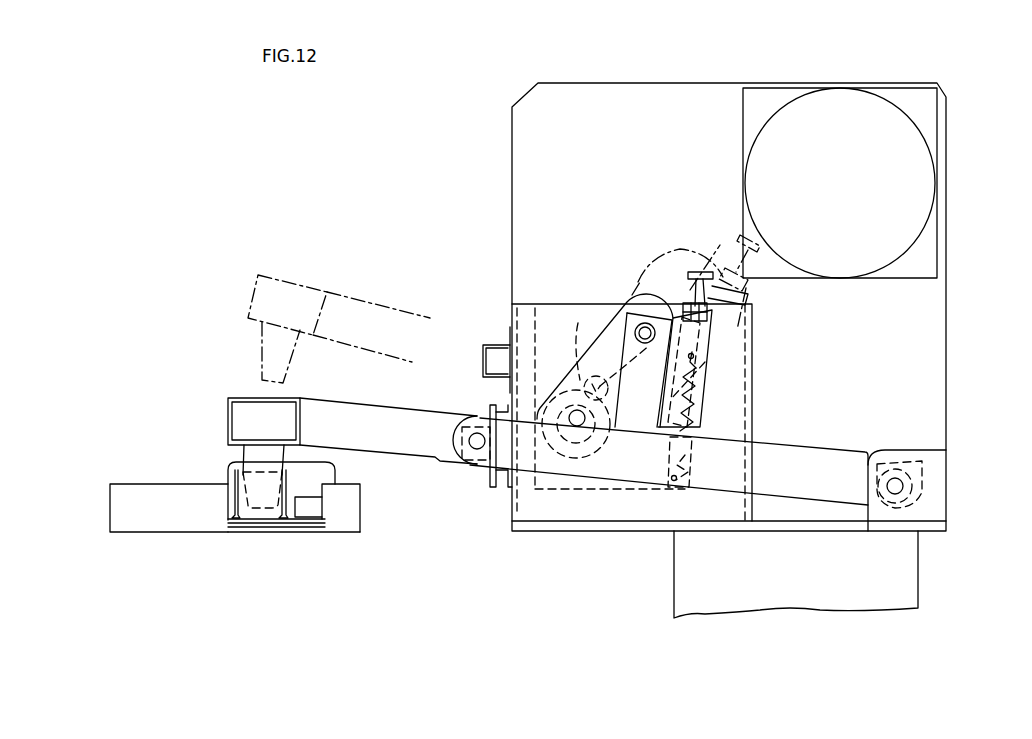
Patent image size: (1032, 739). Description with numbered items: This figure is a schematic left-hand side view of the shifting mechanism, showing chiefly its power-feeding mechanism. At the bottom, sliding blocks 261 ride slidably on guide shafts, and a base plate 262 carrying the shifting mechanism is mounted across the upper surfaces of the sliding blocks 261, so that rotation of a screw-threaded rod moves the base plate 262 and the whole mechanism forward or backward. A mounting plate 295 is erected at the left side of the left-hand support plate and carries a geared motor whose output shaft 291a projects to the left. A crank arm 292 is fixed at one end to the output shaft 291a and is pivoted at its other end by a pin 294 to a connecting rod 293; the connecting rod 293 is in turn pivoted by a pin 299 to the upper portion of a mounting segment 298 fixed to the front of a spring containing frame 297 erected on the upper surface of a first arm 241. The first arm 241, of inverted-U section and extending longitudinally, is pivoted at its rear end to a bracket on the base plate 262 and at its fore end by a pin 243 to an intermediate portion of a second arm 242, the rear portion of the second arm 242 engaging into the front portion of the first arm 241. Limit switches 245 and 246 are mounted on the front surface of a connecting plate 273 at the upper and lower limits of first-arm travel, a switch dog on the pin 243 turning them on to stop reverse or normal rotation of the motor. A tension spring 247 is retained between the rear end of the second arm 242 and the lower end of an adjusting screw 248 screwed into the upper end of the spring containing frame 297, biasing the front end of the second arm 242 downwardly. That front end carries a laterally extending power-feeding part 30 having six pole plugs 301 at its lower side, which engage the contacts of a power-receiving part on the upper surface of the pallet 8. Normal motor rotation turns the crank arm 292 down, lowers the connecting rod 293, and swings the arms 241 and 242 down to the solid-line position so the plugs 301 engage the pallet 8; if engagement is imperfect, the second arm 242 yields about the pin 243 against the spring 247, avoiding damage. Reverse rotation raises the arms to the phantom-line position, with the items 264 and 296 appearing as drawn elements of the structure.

The pallet 8 is at (236, 537).
The power-feeding part 30 is at (222, 406).
The pole plugs 301 is at (243, 455).
The first arm 241 is at (828, 457).
The second arm 242 is at (392, 438).
The pin 243 is at (470, 432).
The limit switch 245 is at (483, 356).
The limit switch 246 is at (470, 466).
The tension spring 247 is at (696, 440).
The adjusting screw 248 is at (695, 300).
The sliding block 261 is at (910, 568).
The base plate 262 is at (836, 528).
The dial 264 is at (913, 186).
The connecting plate 273 is at (518, 312).
The output shaft 291a is at (598, 376).
The crank arm 292 is at (563, 397).
The connecting rod 293 is at (616, 310).
The pin 294 is at (575, 410).
The mounting plate 295 is at (556, 305).
The pivot bracket 296 is at (932, 470).
The spring containing frame 297 is at (708, 372).
The mounting segment 298 is at (645, 300).
The pin 299 is at (645, 343).